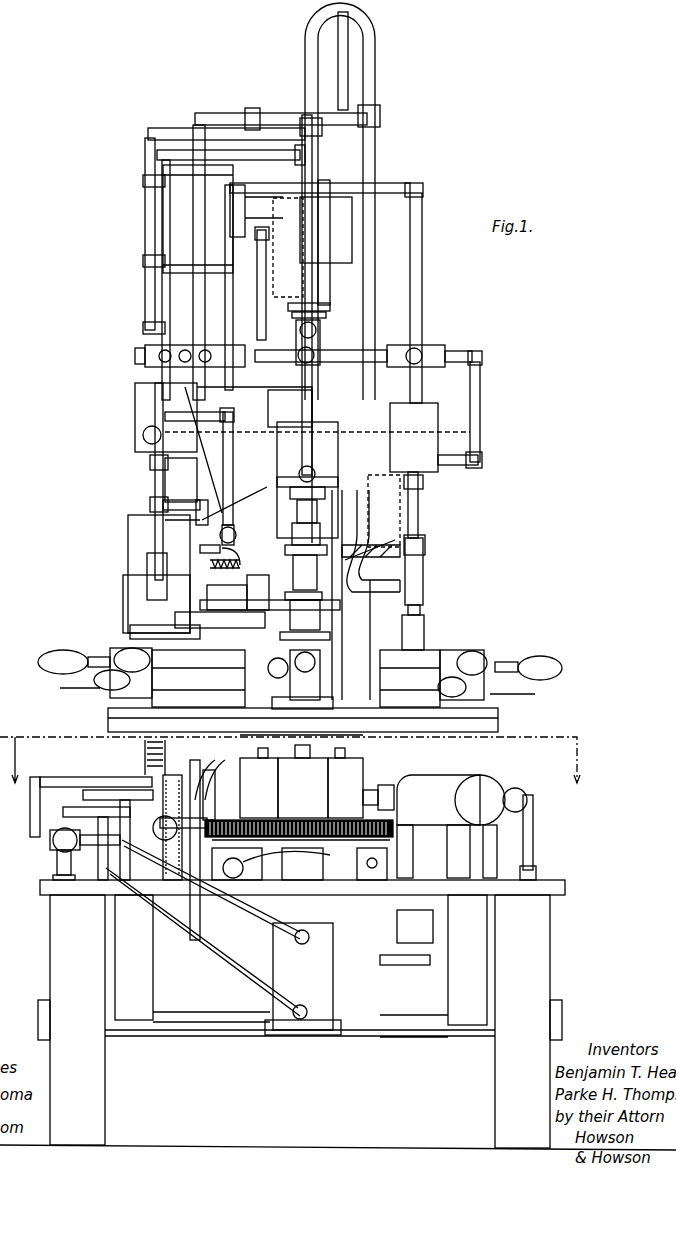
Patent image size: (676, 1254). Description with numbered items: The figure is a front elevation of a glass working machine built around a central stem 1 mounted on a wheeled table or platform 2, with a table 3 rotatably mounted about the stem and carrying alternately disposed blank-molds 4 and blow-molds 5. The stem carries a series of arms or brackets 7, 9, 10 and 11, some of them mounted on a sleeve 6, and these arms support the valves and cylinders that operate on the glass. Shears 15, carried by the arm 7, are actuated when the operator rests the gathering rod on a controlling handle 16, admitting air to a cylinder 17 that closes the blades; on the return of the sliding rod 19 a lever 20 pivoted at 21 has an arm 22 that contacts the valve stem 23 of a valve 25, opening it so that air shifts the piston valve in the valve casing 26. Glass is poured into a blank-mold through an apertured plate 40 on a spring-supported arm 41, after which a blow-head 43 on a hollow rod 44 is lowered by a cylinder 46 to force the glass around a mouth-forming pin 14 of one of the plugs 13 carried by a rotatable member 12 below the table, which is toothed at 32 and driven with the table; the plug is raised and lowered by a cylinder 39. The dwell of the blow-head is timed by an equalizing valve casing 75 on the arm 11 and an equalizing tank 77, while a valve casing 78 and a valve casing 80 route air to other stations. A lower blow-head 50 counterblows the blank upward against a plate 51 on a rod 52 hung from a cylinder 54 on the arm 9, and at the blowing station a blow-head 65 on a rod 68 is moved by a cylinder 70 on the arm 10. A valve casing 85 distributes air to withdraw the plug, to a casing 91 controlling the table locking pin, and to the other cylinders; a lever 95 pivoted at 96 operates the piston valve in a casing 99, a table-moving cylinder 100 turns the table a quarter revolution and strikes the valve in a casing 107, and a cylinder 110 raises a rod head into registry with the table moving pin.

The central stem 1 is at (283, 296).
The table or platform 2 is at (45, 883).
The table 3 is at (108, 722).
The blank-molds 4 is at (90, 650).
The blow-molds 5 is at (222, 655).
The sleeve 6 is at (261, 462).
The arm or bracket 7 is at (128, 541).
The arm or bracket 9 is at (192, 480).
The arm or bracket 10 is at (401, 533).
The arm or bracket 11 is at (342, 240).
The rotatable member 12 is at (303, 788).
The plugs 13 is at (262, 758).
The mouth-forming pins 14 is at (330, 740).
The shears 15 is at (293, 674).
The controlling handle 16 is at (370, 576).
The cylinder 17 is at (135, 590).
The sliding rod 19 is at (268, 590).
The lever 20 is at (238, 590).
The pivot 21 is at (239, 563).
The arm 22 is at (242, 553).
The valve stem 23 is at (208, 550).
The valve 25 is at (232, 540).
The valve casing 26 is at (218, 367).
The teeth 32 is at (299, 797).
The cylinder 39 is at (303, 979).
The apertured plate 40 is at (325, 640).
The spring-supported arm 41 is at (303, 565).
The blow-head 43 is at (318, 530).
The rod 44 is at (310, 287).
The cylinder 46 is at (283, 403).
The lower blow-head 50 is at (145, 748).
The plate 51 is at (130, 635).
The rod 52 is at (148, 485).
The cylinder 54 is at (140, 413).
The blow-head 65 is at (420, 633).
The rod 68 is at (420, 507).
The cylinder 70 is at (414, 437).
The equalizing valve casing 75 is at (345, 265).
The equalizing tank 77 is at (178, 212).
The valve casing 78 is at (338, 345).
The valve casing 80 is at (440, 352).
The valve casing 85 is at (55, 853).
The casing 91 is at (405, 787).
The lever 95 is at (240, 862).
The pivot 96 is at (245, 872).
The casing 99 is at (128, 778).
The table-moving cylinder 100 is at (203, 846).
The casing 107 is at (522, 792).
The cylinder 110 is at (406, 937).